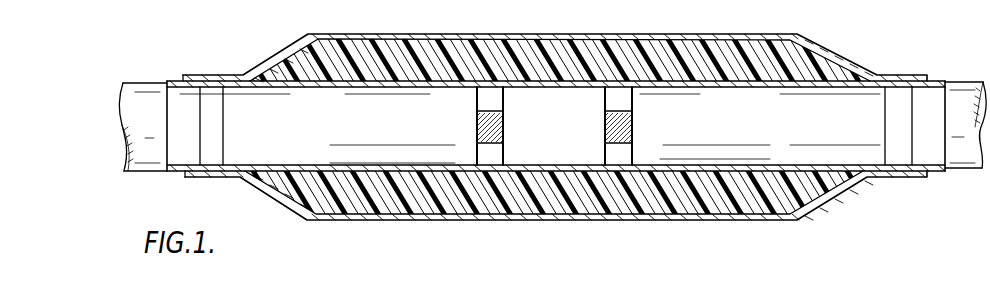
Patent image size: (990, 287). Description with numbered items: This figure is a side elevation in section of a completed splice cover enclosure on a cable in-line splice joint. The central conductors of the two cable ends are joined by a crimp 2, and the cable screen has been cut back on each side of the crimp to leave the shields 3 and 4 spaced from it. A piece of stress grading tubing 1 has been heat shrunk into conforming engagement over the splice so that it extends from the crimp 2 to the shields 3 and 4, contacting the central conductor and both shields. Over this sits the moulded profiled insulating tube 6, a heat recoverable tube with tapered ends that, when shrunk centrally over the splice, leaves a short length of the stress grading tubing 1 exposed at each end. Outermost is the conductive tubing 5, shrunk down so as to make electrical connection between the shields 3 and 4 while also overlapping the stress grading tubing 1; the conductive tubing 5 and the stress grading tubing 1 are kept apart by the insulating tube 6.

The stress grading tubing 1 is at (300, 167).
The crimp 2 is at (548, 105).
The shield 3 is at (913, 160).
The shield 4 is at (167, 155).
The conductive tubing 5 is at (522, 220).
The profiled insulating tube 6 is at (432, 200).